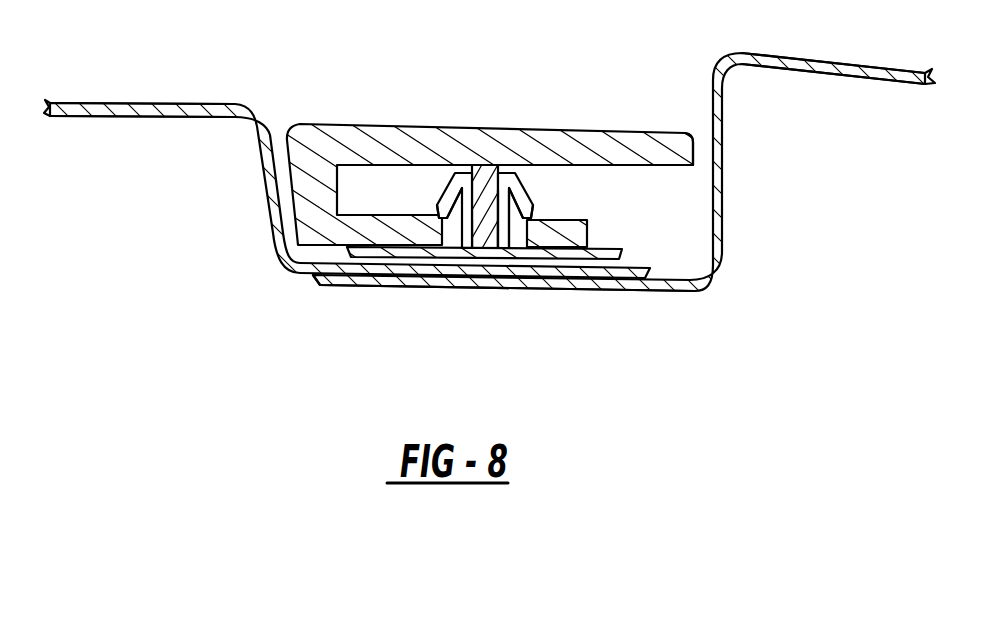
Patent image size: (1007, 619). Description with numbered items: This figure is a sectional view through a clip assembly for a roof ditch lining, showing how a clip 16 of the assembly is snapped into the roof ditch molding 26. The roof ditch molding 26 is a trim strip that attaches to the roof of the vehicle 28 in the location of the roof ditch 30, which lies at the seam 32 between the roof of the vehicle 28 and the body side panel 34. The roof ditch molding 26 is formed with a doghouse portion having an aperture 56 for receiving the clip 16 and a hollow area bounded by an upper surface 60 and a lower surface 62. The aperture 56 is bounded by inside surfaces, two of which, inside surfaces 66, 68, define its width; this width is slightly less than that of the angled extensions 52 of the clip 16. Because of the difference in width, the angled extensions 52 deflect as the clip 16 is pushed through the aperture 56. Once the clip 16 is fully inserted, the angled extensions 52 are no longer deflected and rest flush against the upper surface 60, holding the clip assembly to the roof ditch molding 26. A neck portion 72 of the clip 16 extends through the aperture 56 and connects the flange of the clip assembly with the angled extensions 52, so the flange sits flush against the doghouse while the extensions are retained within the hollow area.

The clip 16 is at (487, 173).
The roof ditch molding 26 is at (615, 138).
The roof of a vehicle 28 is at (148, 103).
The roof ditch 30 is at (640, 231).
The seam 32 is at (313, 276).
The body side panel 34 is at (803, 57).
The angled extension 52 is at (445, 188).
The aperture 56 is at (506, 222).
The upper surface 60 is at (674, 172).
The lower surface 62 is at (563, 219).
The inside surface 66 is at (442, 220).
The inside surface 68 is at (526, 220).
The neck portion 72 is at (485, 220).